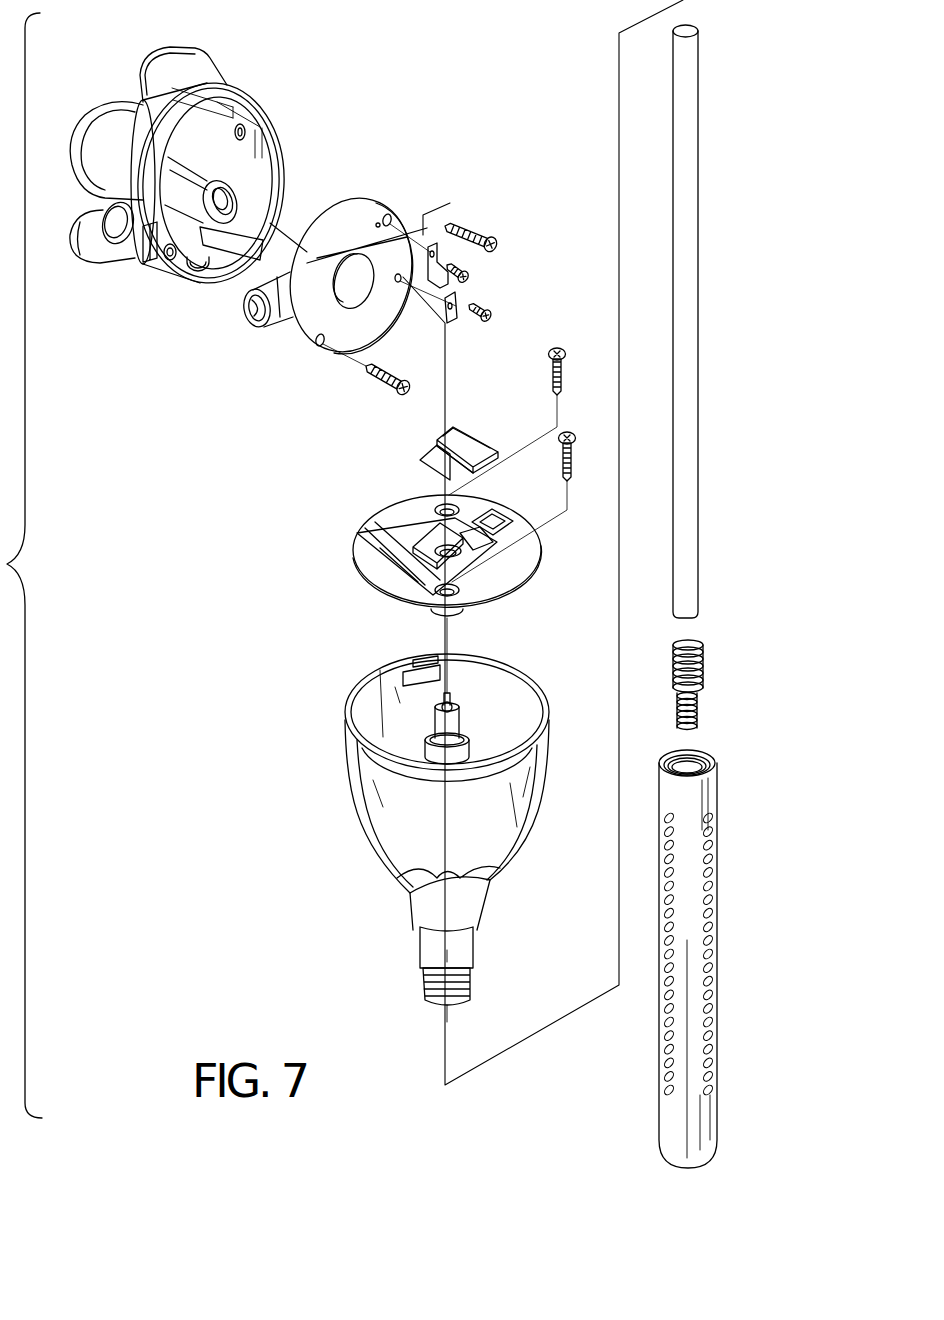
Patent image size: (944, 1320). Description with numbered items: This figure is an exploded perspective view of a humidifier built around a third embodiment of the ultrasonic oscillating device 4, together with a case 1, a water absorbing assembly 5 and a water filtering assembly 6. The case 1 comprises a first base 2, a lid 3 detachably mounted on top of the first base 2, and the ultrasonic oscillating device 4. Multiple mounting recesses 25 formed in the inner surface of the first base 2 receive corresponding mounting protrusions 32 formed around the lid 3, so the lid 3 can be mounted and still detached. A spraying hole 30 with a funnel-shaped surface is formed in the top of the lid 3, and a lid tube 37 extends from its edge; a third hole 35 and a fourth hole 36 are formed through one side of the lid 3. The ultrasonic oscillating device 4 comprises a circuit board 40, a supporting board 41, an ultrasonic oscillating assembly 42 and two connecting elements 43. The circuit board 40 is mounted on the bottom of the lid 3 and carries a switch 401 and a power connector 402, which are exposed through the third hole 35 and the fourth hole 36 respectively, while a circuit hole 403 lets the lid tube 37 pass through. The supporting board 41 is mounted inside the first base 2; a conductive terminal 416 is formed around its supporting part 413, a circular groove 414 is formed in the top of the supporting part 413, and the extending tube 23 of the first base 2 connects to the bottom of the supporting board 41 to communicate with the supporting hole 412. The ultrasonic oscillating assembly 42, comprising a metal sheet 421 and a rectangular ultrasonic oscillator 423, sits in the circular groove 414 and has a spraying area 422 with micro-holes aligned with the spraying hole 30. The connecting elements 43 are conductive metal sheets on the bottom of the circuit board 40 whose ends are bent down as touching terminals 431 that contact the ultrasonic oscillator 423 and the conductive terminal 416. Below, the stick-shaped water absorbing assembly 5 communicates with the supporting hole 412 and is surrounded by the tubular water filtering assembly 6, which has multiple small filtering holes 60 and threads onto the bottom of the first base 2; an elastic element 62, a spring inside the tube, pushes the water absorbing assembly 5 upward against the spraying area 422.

The case 1 is at (352, 933).
The first base 2 is at (525, 816).
The extending tube 23 is at (466, 752).
The mounting recesses 25 is at (410, 673).
The lid 3 is at (213, 96).
The spraying hole 30 is at (232, 193).
The mounting protrusions 32 is at (156, 253).
The third hole 35 is at (113, 237).
The fourth hole 36 is at (202, 270).
The lid tube 37 is at (206, 174).
The ultrasonic oscillating device 4 is at (258, 521).
The circuit board 40 is at (357, 223).
The switch 401 is at (278, 322).
The power connector 402 is at (336, 303).
The circuit hole 403 is at (356, 290).
The supporting board 41 is at (520, 556).
The supporting hole 412 is at (436, 550).
The supporting part 413 is at (472, 553).
The circular groove 414 is at (440, 530).
The conductive terminal 416 is at (495, 516).
The ultrasonic oscillating assembly 42 is at (489, 437).
The metal sheet 421 is at (428, 456).
The spraying area 422 is at (436, 461).
The ultrasonic oscillator 423 is at (458, 430).
The connecting elements 43 is at (433, 257).
The touching terminals 431 is at (442, 276).
The water absorbing assembly 5 is at (704, 300).
The water filtering assembly 6 is at (718, 800).
The filtering holes 60 is at (710, 873).
The elastic element 62 is at (702, 672).